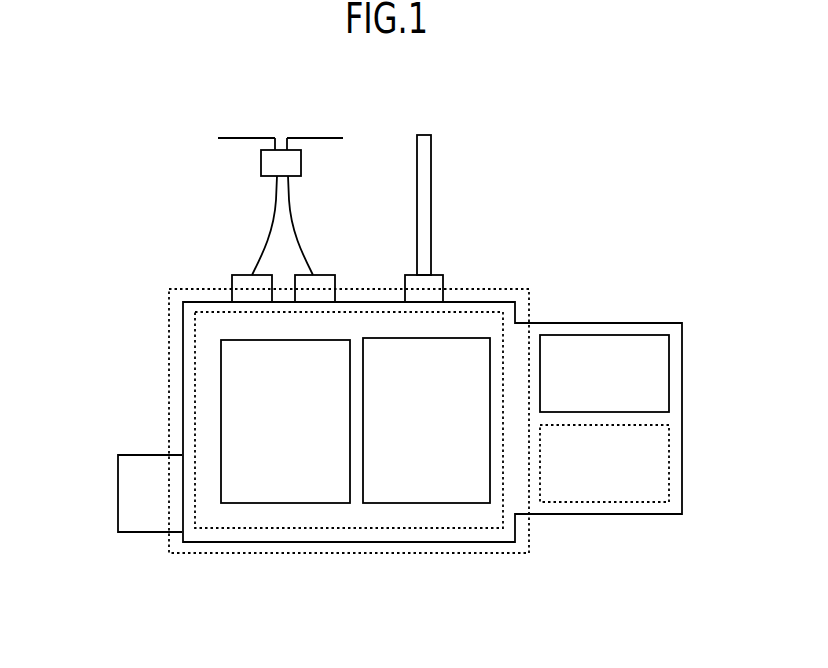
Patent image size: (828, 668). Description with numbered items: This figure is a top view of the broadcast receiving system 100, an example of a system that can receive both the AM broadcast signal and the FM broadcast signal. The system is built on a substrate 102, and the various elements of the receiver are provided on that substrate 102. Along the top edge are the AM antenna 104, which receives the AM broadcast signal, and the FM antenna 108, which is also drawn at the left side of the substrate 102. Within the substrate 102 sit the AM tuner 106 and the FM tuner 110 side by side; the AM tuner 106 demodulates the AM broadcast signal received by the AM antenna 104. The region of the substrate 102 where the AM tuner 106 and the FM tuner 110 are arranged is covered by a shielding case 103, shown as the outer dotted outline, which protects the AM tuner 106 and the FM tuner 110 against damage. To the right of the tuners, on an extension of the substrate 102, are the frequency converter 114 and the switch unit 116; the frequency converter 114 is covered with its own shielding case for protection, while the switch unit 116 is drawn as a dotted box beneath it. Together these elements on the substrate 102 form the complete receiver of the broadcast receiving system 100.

The broadcast receiving system 100 is at (647, 121).
The substrate 102 is at (357, 520).
The shielding case 103 is at (475, 555).
The AM antenna 104 is at (318, 137).
The AM tuner 106 is at (221, 356).
The FM antenna 108 is at (427, 135).
The FM tuner 110 is at (475, 338).
The frequency converter 114 is at (669, 366).
The switch unit 116 is at (669, 456).